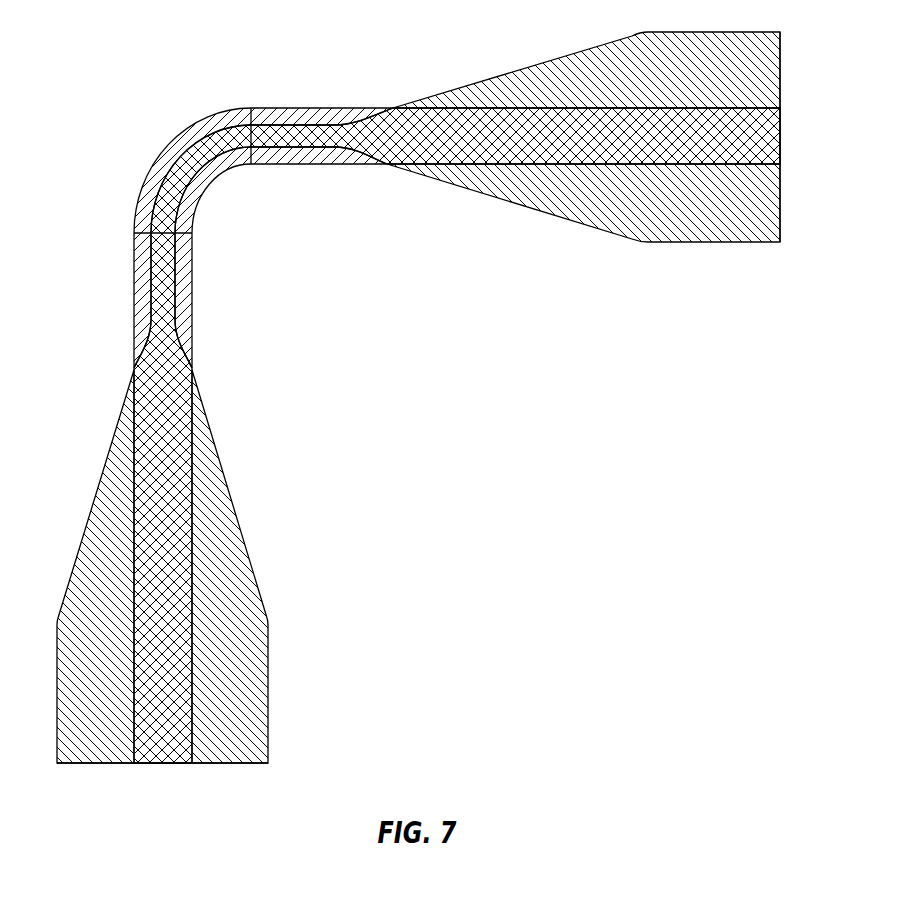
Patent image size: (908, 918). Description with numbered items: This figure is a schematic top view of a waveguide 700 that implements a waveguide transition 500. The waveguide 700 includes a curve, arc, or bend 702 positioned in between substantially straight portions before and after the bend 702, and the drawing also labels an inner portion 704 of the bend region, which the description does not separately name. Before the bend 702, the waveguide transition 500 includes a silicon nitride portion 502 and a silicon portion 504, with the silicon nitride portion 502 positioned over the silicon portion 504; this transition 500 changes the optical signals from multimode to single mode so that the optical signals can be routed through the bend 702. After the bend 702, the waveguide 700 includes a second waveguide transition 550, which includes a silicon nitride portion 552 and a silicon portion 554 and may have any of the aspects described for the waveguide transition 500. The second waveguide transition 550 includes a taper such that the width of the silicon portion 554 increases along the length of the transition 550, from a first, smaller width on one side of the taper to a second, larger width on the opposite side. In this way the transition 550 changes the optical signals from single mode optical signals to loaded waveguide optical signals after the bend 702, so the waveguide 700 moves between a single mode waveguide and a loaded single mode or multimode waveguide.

The waveguide 700 is at (103, 76).
The bend 702 is at (167, 142).
The core layer 704 is at (182, 183).
The second waveguide transition 550 is at (448, 76).
The silicon nitride portion 552 is at (788, 108).
The silicon portion 554 is at (790, 32).
The waveguide transition 500 is at (243, 480).
The silicon nitride portion 502 is at (134, 771).
The silicon portion 504 is at (57, 768).